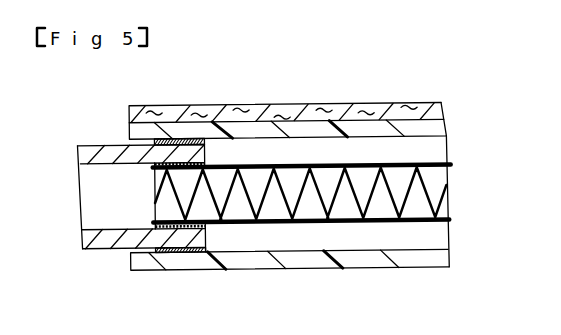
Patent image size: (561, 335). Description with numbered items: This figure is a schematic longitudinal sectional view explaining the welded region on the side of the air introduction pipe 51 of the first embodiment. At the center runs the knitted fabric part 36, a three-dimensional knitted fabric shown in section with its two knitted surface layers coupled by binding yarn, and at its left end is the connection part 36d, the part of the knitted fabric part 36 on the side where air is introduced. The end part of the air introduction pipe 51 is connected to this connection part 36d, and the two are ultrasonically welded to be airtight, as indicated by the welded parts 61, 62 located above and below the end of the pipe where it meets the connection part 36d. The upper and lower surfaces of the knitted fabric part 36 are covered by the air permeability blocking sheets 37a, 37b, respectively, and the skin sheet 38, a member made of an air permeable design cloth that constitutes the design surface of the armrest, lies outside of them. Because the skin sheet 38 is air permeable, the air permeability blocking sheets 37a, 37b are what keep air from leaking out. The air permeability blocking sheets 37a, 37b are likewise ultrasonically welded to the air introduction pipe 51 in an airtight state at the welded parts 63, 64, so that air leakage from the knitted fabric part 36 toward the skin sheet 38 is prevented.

The knitted fabric part 36 is at (370, 151).
The connection part 36d is at (160, 260).
The air permeability blocking sheet 37a is at (314, 132).
The air permeability blocking sheet 37b is at (318, 267).
The skin sheet 38 is at (259, 111).
The air introduction pipe 51 is at (104, 153).
The welded part 61 is at (195, 163).
The welded part 62 is at (187, 230).
The welded part 63 is at (177, 139).
The welded part 64 is at (172, 250).